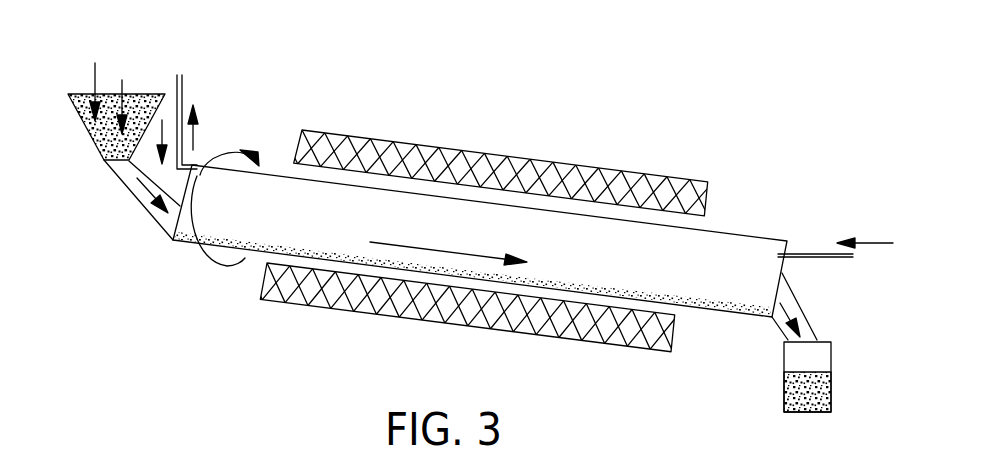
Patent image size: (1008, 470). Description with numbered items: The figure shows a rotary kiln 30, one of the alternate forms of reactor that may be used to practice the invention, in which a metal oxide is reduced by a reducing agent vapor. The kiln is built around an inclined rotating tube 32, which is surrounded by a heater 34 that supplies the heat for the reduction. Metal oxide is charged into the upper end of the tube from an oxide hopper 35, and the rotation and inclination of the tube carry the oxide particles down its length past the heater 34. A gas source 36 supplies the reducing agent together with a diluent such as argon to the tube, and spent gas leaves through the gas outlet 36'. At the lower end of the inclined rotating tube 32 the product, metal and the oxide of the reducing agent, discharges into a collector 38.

The rotary kiln 30 is at (622, 142).
The inclined rotating tube 32 is at (745, 233).
The heater 34 is at (655, 170).
The oxide hopper 35 is at (132, 93).
The gas source 36 is at (836, 271).
The gas outlet 36' is at (221, 108).
The collector 38 is at (832, 366).